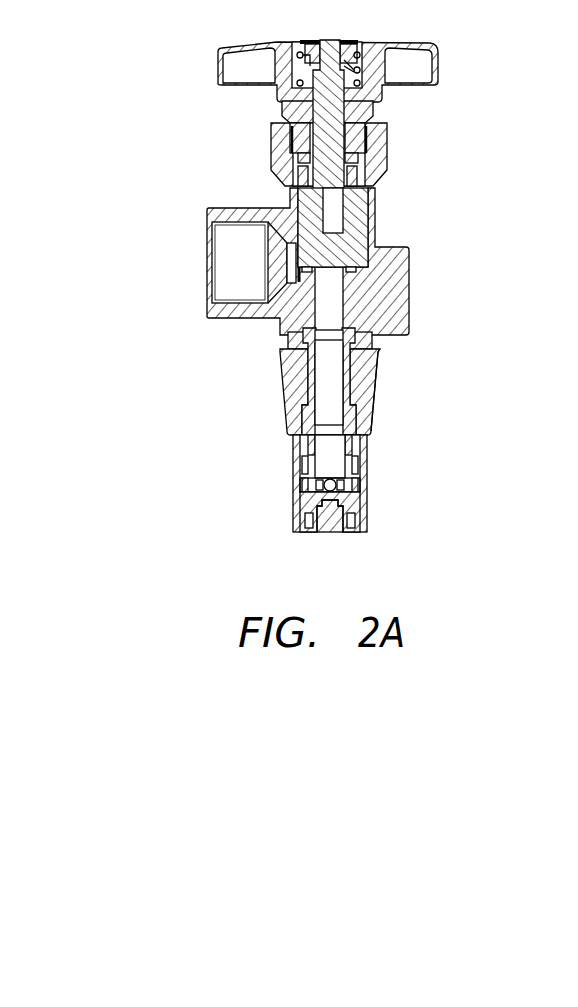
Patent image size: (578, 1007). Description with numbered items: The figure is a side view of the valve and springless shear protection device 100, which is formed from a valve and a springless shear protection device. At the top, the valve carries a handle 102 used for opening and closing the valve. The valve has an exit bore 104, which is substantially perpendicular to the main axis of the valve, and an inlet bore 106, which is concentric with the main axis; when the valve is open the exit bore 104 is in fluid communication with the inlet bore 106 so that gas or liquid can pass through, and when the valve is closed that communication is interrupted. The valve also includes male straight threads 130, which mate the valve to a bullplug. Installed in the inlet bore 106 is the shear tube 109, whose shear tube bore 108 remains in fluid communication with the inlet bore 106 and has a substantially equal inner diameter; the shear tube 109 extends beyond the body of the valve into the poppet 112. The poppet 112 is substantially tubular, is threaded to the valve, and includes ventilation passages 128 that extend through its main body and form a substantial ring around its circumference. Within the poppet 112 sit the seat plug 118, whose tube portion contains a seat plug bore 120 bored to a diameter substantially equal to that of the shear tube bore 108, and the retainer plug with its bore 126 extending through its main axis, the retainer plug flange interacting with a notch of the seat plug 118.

The valve and springless shear protection device 100 is at (279, 307).
The handle 102 is at (440, 66).
The exit bore 104 is at (208, 273).
The inlet bore 106 is at (362, 302).
The shear tube bore 108 is at (330, 382).
The shear tube 109 is at (303, 372).
The poppet 112 is at (372, 450).
The seat plug 118 is at (364, 500).
The seat plug bore 120 is at (330, 463).
The bore 126 is at (330, 524).
The ventilation passages 128 is at (366, 481).
The male straight threads 130 is at (379, 406).